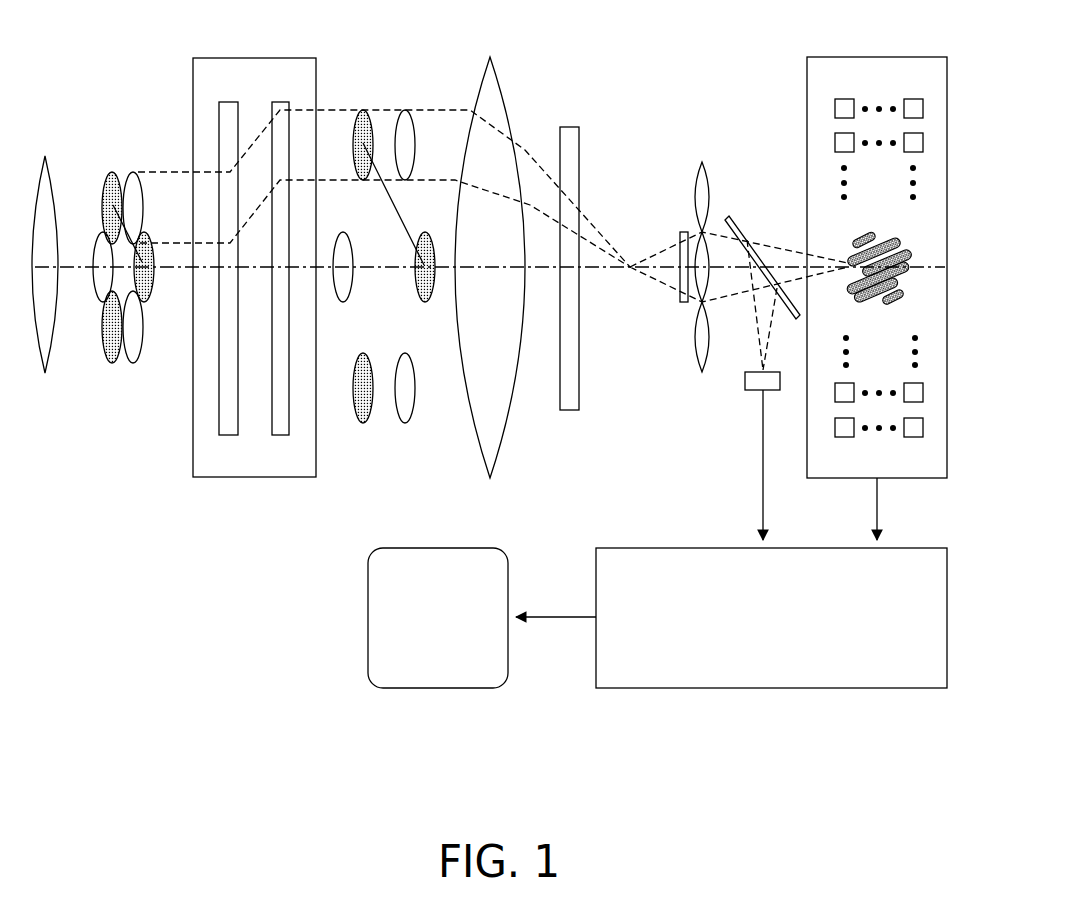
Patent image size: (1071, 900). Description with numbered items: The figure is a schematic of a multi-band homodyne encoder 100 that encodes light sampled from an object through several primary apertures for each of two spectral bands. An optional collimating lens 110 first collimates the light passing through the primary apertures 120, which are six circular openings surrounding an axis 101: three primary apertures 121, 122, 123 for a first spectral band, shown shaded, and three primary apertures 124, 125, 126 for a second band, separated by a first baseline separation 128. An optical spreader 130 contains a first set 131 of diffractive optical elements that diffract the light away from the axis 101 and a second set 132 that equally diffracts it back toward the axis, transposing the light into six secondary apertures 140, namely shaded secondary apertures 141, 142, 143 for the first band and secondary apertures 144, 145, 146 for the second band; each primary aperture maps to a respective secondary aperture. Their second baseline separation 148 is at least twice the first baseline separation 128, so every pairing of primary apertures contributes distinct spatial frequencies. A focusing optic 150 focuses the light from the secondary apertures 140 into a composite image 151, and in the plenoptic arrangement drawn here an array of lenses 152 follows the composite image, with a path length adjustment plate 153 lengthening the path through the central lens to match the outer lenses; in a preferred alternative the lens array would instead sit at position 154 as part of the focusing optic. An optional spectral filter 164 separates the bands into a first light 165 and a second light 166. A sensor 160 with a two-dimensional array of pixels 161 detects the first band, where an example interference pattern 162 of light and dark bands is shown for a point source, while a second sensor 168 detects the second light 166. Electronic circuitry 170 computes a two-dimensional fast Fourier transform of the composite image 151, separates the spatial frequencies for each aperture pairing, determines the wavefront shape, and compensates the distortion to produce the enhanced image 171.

The multi-band homodyne encoder 100 is at (59, 54).
The axis 101 is at (92, 266).
The collimating lens 110 is at (45, 158).
The primary apertures 120 is at (124, 253).
The primary aperture 121 is at (102, 212).
The primary aperture 122 is at (144, 296).
The primary aperture 123 is at (104, 347).
The primary aperture 124 is at (140, 347).
The primary aperture 125 is at (100, 296).
The primary aperture 126 is at (143, 212).
The first baseline separation 128 is at (147, 262).
The optical spreader 130 is at (251, 249).
The first set of diffractive optical elements 131 is at (228, 102).
The second set of diffractive optical elements 132 is at (280, 102).
The secondary apertures 140 is at (385, 242).
The secondary aperture 141 is at (353, 158).
The secondary aperture 142 is at (414, 278).
The secondary aperture 143 is at (353, 365).
The secondary aperture 144 is at (415, 365).
The secondary aperture 145 is at (353, 258).
The secondary aperture 146 is at (415, 158).
The second baseline separation 148 is at (402, 212).
The focusing optic 150 is at (490, 58).
The composite image 151 is at (633, 260).
The array of lenses 152 is at (702, 162).
The path length adjustment plate 153 is at (684, 232).
The position 154 is at (568, 127).
The sensor 160 is at (873, 280).
The pixels 161 is at (840, 99).
The interference pattern 162 is at (848, 249).
The spectral filter 164 is at (736, 230).
The first light 165 is at (772, 244).
The second light 166 is at (757, 348).
The second sensor 168 is at (745, 381).
The electronic circuitry 170 is at (612, 548).
The enhanced image 171 is at (402, 548).